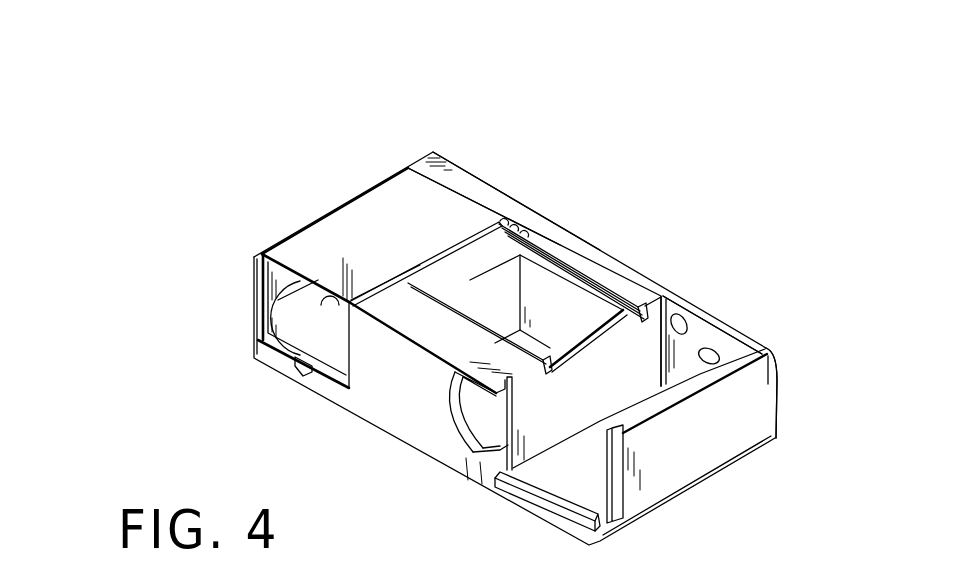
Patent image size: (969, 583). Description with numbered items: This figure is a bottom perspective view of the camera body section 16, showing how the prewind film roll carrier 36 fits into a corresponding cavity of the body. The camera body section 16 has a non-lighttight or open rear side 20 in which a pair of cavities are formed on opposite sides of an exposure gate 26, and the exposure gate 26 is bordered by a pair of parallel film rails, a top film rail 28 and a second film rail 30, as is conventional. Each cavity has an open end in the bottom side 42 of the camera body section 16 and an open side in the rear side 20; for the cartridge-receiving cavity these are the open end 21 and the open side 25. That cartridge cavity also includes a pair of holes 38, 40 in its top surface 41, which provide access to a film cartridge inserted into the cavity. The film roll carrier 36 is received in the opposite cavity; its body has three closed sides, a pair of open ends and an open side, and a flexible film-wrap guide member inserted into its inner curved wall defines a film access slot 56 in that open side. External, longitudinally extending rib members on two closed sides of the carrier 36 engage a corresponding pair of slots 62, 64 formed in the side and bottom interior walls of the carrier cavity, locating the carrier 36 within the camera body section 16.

The camera body section 16 is at (451, 121).
The open rear side 20 is at (513, 197).
The open end 21 is at (578, 478).
The open side 25 is at (700, 334).
The exposure gate 26 is at (597, 305).
The top film rail 28 is at (550, 232).
The film rail 30 is at (500, 323).
The film roll carrier 36 is at (340, 210).
The hole 38 is at (674, 296).
The hole 40 is at (718, 349).
The top surface 41 is at (780, 415).
The bottom side 42 is at (427, 423).
The film access slot 56 is at (418, 268).
The slot 62 is at (258, 298).
The slot 64 is at (300, 372).